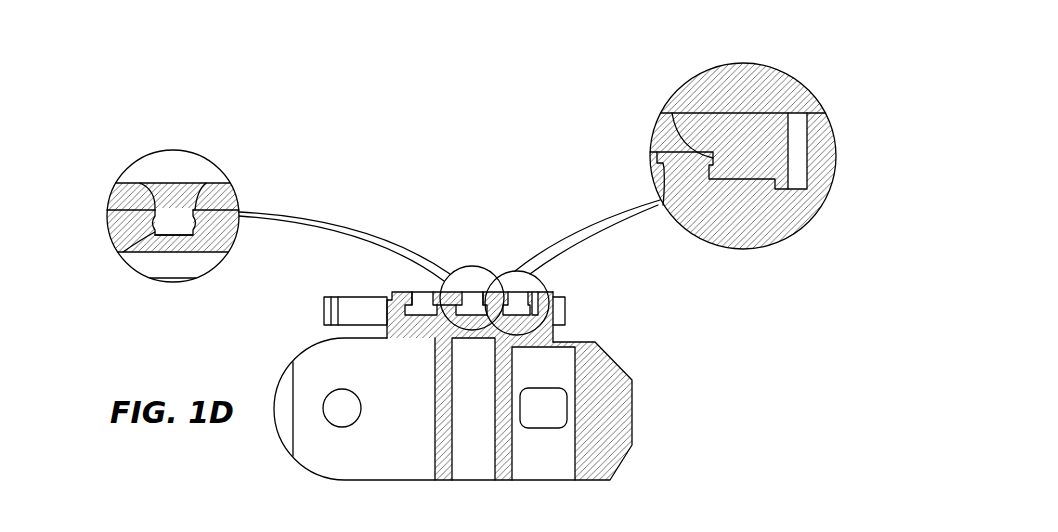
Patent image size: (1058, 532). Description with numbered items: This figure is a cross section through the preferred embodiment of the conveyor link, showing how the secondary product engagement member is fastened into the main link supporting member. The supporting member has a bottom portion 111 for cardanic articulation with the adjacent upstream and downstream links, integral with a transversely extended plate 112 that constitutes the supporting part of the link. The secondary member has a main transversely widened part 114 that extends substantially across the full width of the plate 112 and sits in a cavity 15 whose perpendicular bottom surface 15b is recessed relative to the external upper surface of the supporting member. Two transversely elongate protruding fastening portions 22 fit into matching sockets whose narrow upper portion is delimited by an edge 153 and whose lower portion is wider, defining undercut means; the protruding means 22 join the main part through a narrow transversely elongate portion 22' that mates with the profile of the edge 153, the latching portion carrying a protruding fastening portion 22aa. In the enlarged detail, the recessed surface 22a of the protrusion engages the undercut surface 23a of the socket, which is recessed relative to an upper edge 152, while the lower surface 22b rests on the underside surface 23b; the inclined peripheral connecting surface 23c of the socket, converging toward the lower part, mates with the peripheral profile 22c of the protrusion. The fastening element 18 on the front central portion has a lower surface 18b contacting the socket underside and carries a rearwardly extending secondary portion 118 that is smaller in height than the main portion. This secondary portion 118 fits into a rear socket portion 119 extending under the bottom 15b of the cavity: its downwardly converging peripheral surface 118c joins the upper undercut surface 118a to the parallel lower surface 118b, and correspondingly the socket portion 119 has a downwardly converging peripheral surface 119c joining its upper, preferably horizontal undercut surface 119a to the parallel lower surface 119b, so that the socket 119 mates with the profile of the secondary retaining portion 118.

The bottom portion 111 is at (643, 406).
The transversely extended plate 112 is at (580, 313).
The main transversely widened part 114 is at (549, 281).
The cavity 15 is at (394, 296).
The perpendicular bottom surface 15b is at (449, 301).
The upper edge 152 is at (492, 306).
The perpendicular edge 153 is at (157, 208).
The fastening element 18 is at (565, 299).
The lower surface 18b is at (826, 186).
The protruding fastening portion 22 is at (467, 234).
The narrow transversely elongate portion 22' is at (443, 240).
The recessed surface 22a is at (152, 228).
The protruding fastening portion 22aa is at (167, 230).
The lower surface 22b is at (178, 238).
The peripheral profile 22c is at (150, 240).
The undercut surface 23a is at (143, 188).
The underside surface 23b is at (197, 238).
The peripheral connecting surface 23c is at (163, 237).
The secondary portion 118 is at (745, 167).
The upper undercut surface 118a is at (677, 113).
The lower surface 118b is at (757, 187).
The downwardly converging peripheral surface 118c is at (740, 168).
The rear socket portion 119 is at (747, 183).
The undercut surface 119a is at (708, 172).
The lower surface 119b is at (768, 187).
The downwardly converging peripheral surface 119c is at (662, 148).